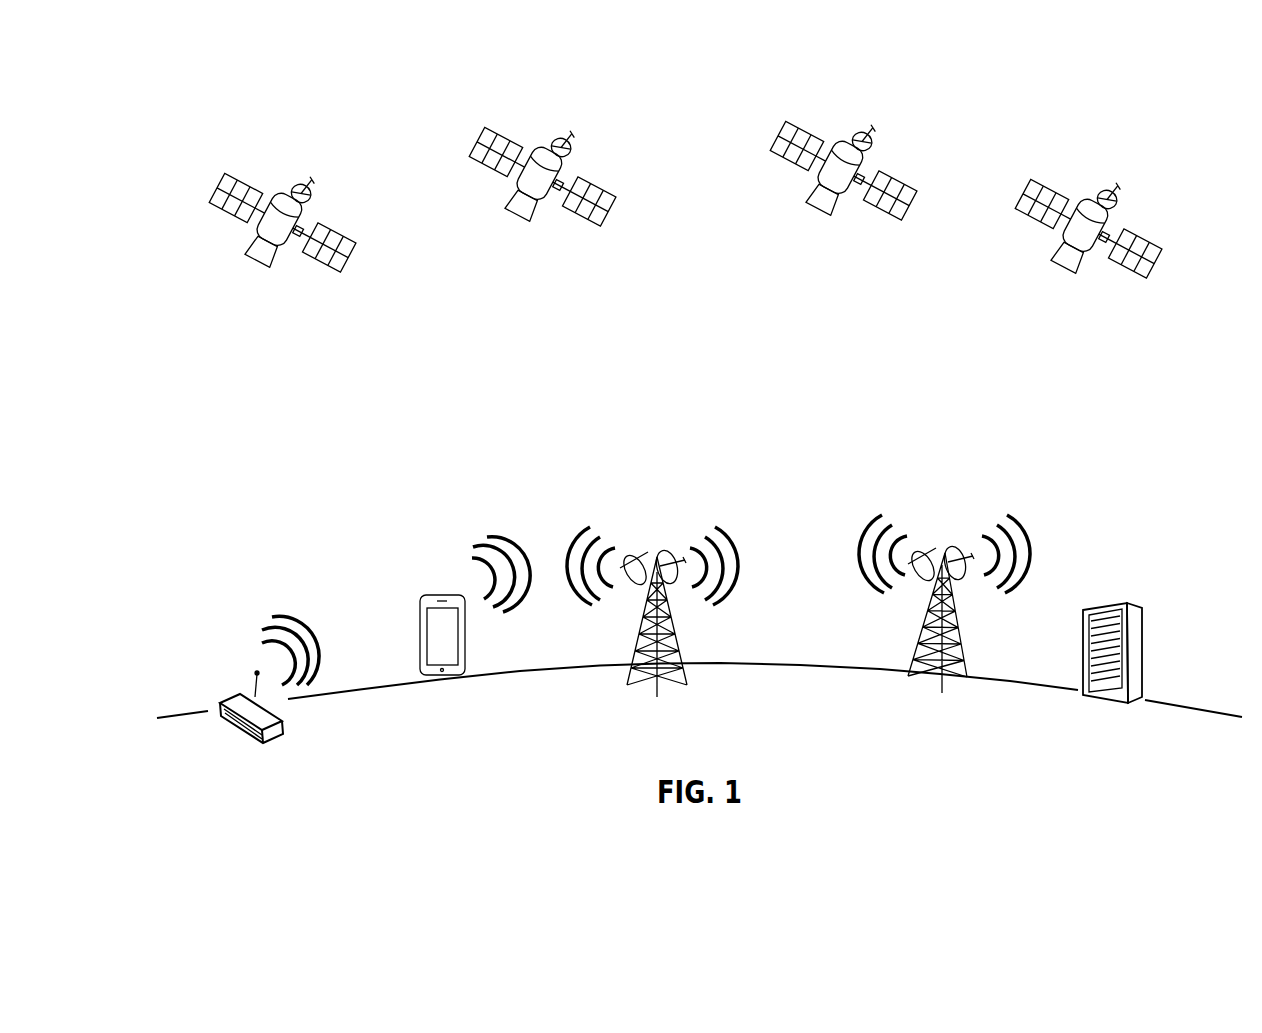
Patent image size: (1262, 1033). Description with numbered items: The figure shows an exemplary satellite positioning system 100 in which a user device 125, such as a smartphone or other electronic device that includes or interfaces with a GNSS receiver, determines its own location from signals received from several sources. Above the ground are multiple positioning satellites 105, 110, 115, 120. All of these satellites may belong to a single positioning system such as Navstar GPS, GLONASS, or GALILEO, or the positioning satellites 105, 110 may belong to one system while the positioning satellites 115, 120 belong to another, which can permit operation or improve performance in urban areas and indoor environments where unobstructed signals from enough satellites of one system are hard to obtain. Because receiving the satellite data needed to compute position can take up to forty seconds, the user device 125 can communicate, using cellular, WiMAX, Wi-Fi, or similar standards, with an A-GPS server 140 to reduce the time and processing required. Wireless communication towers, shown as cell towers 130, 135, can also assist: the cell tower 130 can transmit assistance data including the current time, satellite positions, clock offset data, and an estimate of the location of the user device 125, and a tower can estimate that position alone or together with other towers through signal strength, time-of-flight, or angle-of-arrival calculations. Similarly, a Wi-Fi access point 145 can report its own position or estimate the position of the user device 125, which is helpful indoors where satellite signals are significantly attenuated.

The satellite positioning system 100 is at (1191, 83).
The positioning satellite 105 is at (307, 213).
The positioning satellite 110 is at (567, 167).
The positioning satellite 115 is at (868, 161).
The positioning satellite 120 is at (1113, 219).
The user device 125 is at (444, 596).
The cell tower 130 is at (637, 566).
The cell tower 135 is at (930, 560).
The A-GPS server 140 is at (1129, 603).
The Wi-Fi access point 145 is at (235, 700).